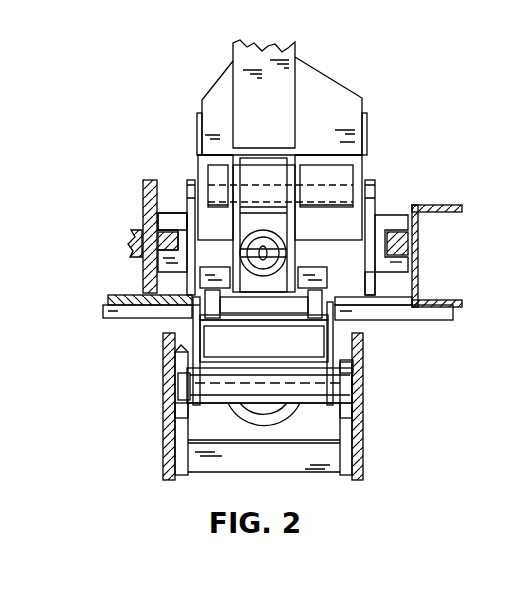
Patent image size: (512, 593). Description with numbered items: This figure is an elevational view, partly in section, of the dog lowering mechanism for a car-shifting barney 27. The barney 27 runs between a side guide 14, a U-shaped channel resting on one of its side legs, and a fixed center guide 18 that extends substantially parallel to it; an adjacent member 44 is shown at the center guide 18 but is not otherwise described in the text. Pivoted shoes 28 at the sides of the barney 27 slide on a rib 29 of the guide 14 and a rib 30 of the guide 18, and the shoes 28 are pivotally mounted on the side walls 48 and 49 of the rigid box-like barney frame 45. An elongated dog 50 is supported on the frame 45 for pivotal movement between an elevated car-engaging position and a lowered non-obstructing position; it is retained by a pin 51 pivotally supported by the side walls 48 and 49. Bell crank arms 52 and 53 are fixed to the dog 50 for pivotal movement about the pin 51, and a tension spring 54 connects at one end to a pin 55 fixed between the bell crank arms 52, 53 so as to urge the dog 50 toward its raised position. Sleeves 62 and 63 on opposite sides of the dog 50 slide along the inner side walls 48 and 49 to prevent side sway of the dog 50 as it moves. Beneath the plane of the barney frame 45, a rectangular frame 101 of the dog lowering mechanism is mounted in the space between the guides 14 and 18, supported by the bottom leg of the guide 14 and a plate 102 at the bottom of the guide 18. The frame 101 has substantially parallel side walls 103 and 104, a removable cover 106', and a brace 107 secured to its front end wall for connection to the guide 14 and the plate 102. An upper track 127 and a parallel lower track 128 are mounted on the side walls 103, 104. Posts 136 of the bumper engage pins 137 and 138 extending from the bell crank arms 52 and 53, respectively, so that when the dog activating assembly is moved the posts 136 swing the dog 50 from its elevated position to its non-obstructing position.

The side guide 14 is at (419, 208).
The center guide 18 is at (143, 190).
The barney 27 is at (368, 174).
The shoes 28 is at (178, 222).
The rib 29 is at (402, 244).
The rib 30 is at (167, 246).
The rail extension 44 is at (142, 236).
The frame 45 is at (163, 221).
The side wall 48 is at (190, 283).
The side wall 49 is at (371, 289).
The dog 50 is at (275, 58).
The pin 51 is at (264, 192).
The bell crank arm 52 is at (228, 260).
The bell crank arm 53 is at (297, 257).
The tension spring 54 is at (283, 241).
The pin 55 is at (250, 252).
The sleeve 62 is at (203, 122).
The sleeve 63 is at (364, 130).
The frame 101 is at (276, 406).
The plate 102 is at (125, 295).
The side wall 103 is at (365, 462).
The side wall 104 is at (164, 405).
The removable cover 106' is at (130, 355).
The brace 107 is at (455, 312).
The upper track 127 is at (346, 366).
The track 128 is at (183, 407).
The posts 136 is at (316, 300).
The pin 137 is at (207, 292).
The pin 138 is at (313, 271).